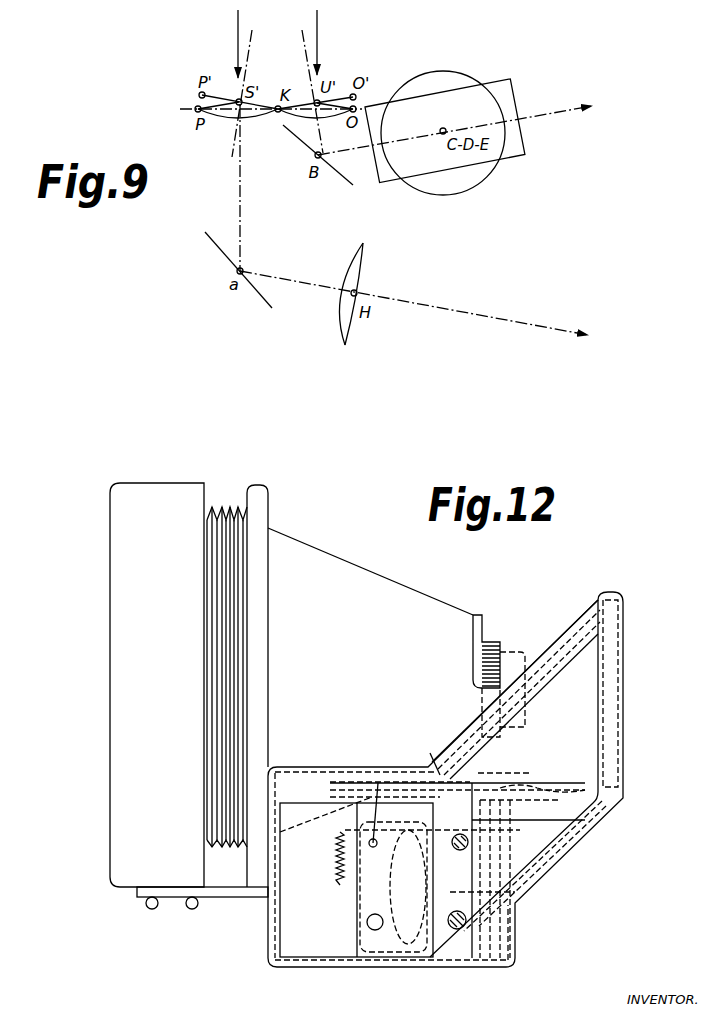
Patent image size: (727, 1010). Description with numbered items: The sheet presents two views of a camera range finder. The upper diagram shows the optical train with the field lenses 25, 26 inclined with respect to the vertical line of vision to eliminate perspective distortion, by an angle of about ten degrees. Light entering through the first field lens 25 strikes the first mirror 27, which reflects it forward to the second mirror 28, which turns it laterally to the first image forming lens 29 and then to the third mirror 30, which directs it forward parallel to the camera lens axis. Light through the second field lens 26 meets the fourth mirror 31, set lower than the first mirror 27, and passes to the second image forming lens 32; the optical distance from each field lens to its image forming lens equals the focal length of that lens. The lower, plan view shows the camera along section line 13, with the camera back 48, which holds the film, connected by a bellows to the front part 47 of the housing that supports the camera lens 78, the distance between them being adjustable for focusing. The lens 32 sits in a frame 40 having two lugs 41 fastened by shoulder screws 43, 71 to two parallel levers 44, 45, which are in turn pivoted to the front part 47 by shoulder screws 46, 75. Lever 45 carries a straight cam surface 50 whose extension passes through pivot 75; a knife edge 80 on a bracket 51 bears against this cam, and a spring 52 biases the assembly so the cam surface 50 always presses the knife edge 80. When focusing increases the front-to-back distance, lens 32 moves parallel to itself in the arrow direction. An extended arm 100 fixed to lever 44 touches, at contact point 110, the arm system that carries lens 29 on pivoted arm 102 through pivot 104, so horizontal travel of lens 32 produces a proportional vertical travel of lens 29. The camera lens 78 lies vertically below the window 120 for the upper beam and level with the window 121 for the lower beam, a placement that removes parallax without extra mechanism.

In FIG. 12, the line 13— 13 is at (232, 873).
In FIG. 9, the first field lens 25 is at (341, 97).
In FIG. 12, the first field lens 25 is at (338, 945).
In FIG. 9, the second field lens 26 is at (261, 104).
In FIG. 12, the second field lens 26 is at (277, 947).
In FIG. 9, the first mirror 27 is at (302, 141).
In FIG. 9, the second mirror 28 is at (445, 151).
In FIG. 12, the second mirror 28 is at (587, 833).
In FIG. 9, the first image forming lens 29 is at (432, 72).
In FIG. 12, the first image forming lens 29 is at (537, 788).
In FIG. 9, the third mirror 30 is at (392, 184).
In FIG. 12, the third mirror 30 is at (555, 652).
In FIG. 9, the fourth mirror 31 is at (258, 293).
In FIG. 9, the second image forming lens 32 is at (338, 323).
In FIG. 12, the second image forming lens 32 is at (380, 940).
In FIG. 12, the frame 40 is at (405, 953).
In FIG. 12, the lugs 41 is at (360, 918).
In FIG. 12, the pivot or shoulder screw 43 is at (340, 920).
In FIG. 12, the lever 44 is at (432, 957).
In FIG. 12, the lever 45 is at (430, 753).
In FIG. 12, the shoulder screw 46 is at (465, 962).
In FIG. 12, the front part of camera housing 47 is at (515, 957).
In FIG. 12, the camera back 48 is at (118, 888).
In FIG. 12, the straight cam surface 50 is at (393, 885).
In FIG. 12, the bracket 51 is at (270, 918).
In FIG. 12, the spring 52 is at (338, 847).
In FIG. 12, the pivot or shoulder screw 71 is at (378, 783).
In FIG. 12, the shoulder screw 75 is at (483, 870).
In FIG. 12, the camera lens 78 is at (507, 650).
In FIG. 12, the knife edge 80 is at (338, 862).
In FIG. 12, the extended arm 100 is at (505, 891).
In FIG. 12, the pivoted arm 102 is at (342, 783).
In FIG. 12, the pivot 104 is at (330, 797).
In FIG. 12, the contact point 110 is at (478, 773).
In FIG. 12, the window for the upper beam 120 is at (623, 767).
In FIG. 12, the window for the lower beam 121 is at (517, 930).